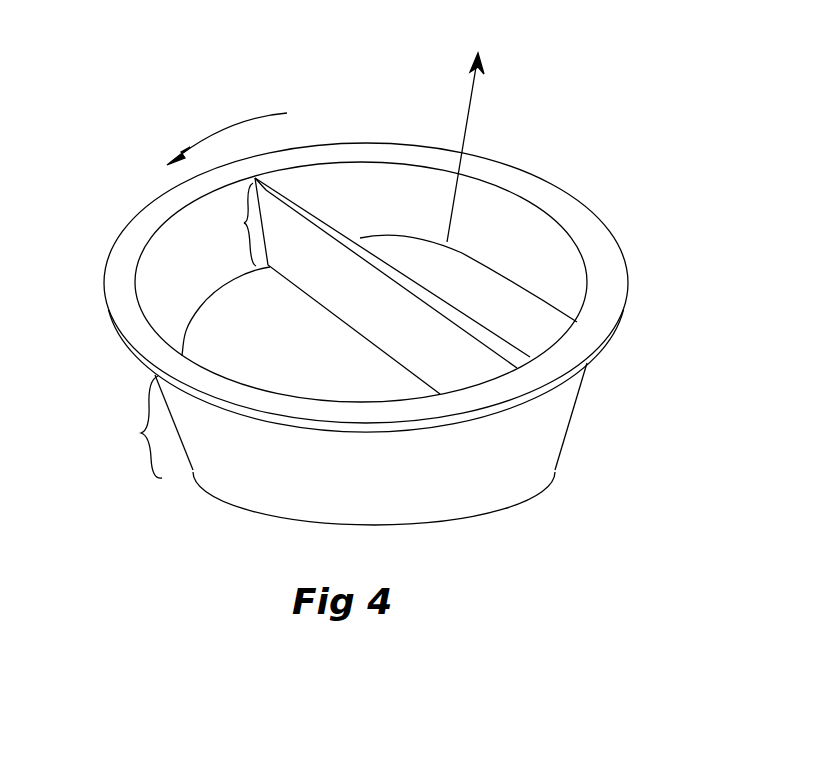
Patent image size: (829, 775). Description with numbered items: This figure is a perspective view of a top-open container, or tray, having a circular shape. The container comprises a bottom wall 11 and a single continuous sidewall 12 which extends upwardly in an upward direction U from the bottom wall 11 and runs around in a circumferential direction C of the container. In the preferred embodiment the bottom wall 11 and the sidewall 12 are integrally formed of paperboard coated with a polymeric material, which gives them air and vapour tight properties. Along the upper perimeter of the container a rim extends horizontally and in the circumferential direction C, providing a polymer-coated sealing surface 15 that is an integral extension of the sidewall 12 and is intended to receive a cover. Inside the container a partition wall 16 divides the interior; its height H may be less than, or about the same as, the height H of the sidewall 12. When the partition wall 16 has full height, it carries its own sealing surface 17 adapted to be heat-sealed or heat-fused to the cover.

The bottom wall 11 is at (517, 320).
The sidewall 12 is at (513, 217).
The sealing surface 15 is at (598, 307).
The partition wall 16 is at (447, 348).
The sealing surface 17 is at (302, 210).
The upward direction U is at (484, 133).
The circumferential direction C is at (227, 116).
The height H is at (178, 330).